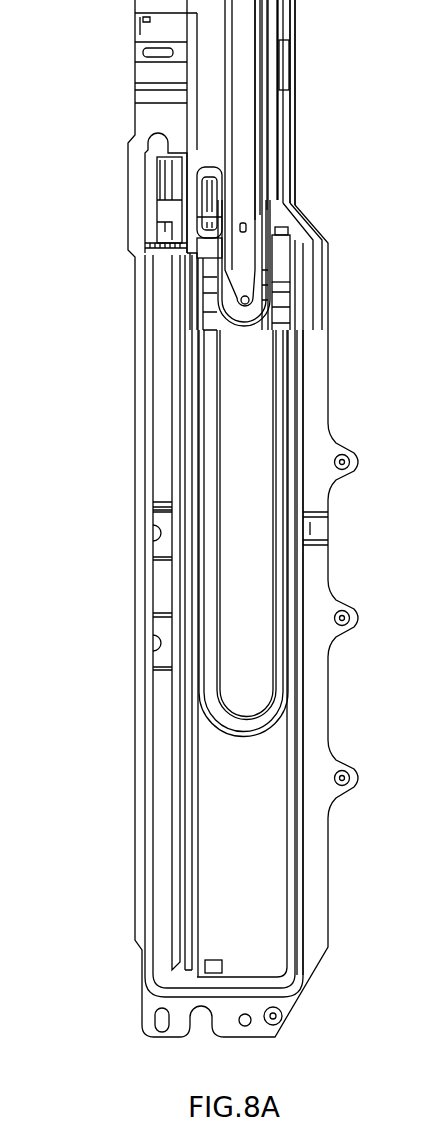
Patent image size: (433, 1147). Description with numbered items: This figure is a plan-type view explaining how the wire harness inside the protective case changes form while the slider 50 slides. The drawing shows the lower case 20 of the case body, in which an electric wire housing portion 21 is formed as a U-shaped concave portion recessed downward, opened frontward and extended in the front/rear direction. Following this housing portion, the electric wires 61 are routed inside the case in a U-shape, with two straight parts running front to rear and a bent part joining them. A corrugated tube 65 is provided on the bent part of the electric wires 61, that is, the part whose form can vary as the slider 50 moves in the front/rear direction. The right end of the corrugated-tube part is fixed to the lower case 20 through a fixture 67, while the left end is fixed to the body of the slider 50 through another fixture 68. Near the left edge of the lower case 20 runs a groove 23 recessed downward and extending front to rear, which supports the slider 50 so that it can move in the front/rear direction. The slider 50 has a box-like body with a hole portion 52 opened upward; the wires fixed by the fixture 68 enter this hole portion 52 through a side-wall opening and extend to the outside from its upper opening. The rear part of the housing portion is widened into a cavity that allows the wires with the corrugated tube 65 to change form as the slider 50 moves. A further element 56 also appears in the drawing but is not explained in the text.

The lower case 20 is at (330, 968).
The electric wire housing portion 21 is at (205, 82).
The groove 23 is at (165, 775).
The slider 50 is at (128, 143).
The hole portion 52 is at (165, 178).
The mounting tab 56 is at (368, 551).
The electric wires 61 is at (283, 150).
The corrugated tube 65 is at (283, 405).
The fixture 67 is at (285, 260).
The fixture 68 is at (205, 255).